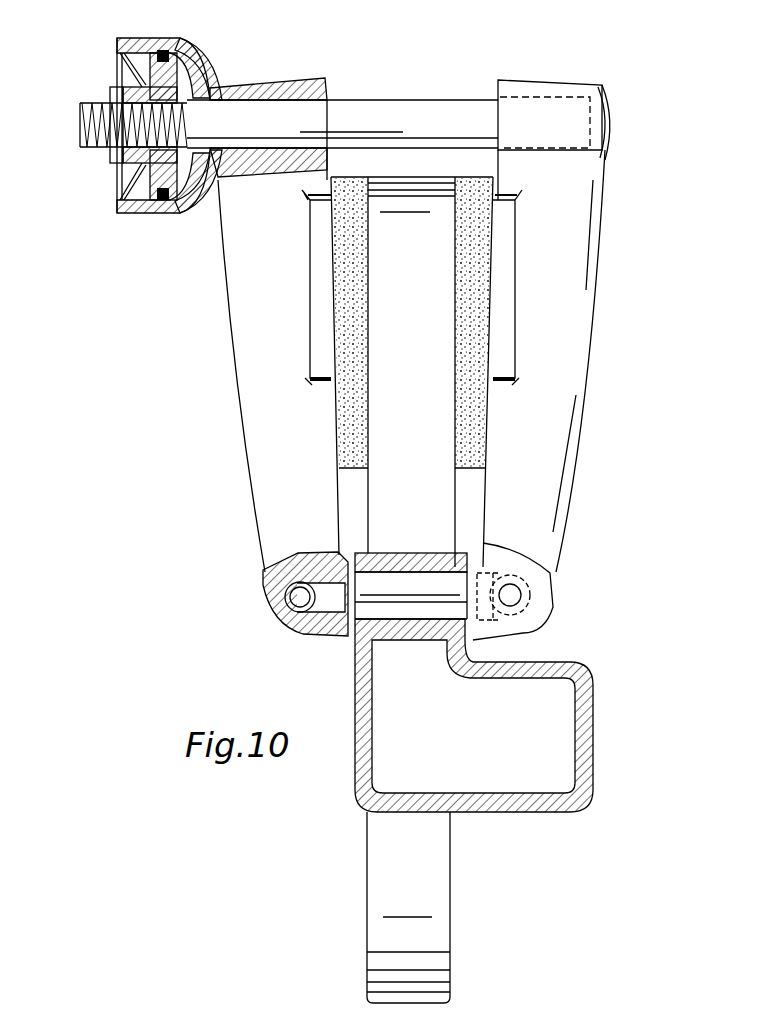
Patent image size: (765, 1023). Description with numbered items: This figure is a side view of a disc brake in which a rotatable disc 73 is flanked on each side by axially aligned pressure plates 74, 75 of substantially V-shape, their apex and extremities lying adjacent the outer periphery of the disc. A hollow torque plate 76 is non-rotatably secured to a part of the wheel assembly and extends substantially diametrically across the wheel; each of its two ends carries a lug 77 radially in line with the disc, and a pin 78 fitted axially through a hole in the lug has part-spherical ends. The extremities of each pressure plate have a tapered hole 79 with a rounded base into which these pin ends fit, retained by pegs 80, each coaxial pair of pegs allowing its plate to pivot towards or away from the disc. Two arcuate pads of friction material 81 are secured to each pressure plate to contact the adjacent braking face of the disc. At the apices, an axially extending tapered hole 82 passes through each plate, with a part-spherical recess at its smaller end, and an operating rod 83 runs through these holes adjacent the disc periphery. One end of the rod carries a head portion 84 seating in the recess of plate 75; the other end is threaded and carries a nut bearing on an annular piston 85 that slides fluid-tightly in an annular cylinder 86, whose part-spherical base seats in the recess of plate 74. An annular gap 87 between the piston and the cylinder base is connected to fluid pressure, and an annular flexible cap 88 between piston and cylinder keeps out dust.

The rotatable disc 73 is at (438, 888).
The pressure plate 74 is at (238, 352).
The pressure plate 75 is at (573, 353).
The hollow torque plate 76 is at (523, 802).
The lug 77 is at (405, 635).
The pin 78 is at (423, 598).
The tapered hole 79 is at (338, 620).
The peg 80 is at (300, 597).
The pad of friction material 81 is at (463, 308).
The tapered hole 82 is at (300, 93).
The operating rod 83 is at (422, 112).
The head portion 84 is at (612, 150).
The annular piston 85 is at (148, 213).
The annular cylinder 86 is at (165, 214).
The annular gap 87 is at (183, 183).
The annular flexible cap 88 is at (130, 63).